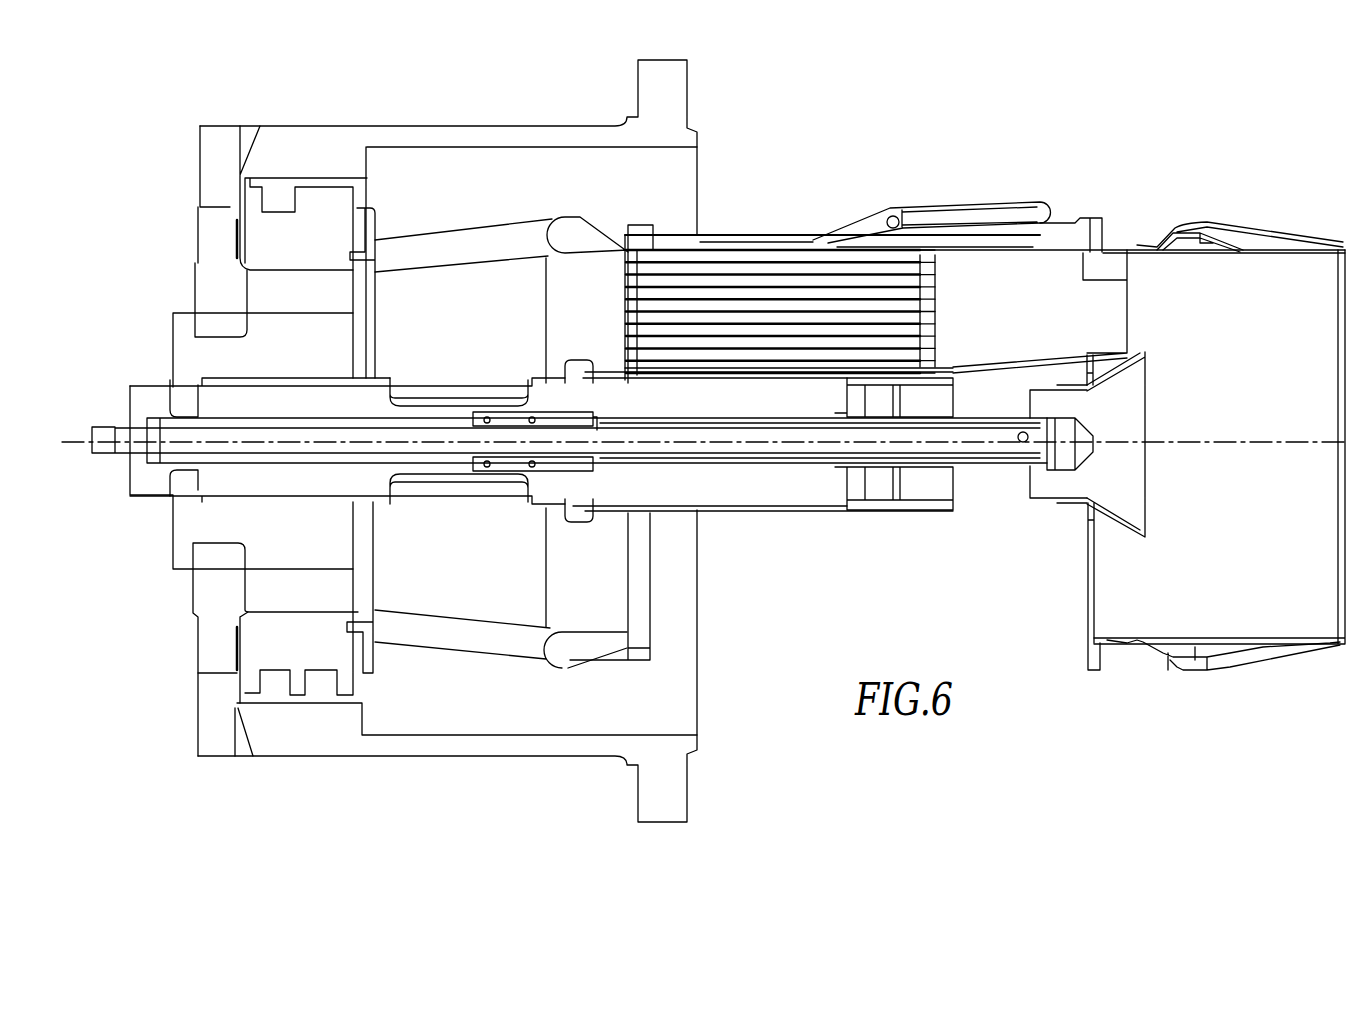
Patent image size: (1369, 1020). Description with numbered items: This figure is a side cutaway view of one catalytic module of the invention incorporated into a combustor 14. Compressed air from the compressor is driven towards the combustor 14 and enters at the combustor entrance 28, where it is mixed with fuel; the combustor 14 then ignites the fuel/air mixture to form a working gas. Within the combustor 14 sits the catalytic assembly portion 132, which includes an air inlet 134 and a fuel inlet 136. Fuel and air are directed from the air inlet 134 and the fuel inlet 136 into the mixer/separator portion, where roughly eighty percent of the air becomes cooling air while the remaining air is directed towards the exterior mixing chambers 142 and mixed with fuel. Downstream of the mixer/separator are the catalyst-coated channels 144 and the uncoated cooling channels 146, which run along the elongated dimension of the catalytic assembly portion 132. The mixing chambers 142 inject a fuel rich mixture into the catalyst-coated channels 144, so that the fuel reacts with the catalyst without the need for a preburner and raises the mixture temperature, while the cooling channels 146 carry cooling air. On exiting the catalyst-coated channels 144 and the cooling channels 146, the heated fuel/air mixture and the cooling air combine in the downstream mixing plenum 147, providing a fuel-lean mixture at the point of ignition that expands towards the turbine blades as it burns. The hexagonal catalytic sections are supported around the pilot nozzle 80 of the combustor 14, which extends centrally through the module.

The combustor 14 is at (818, 552).
The combustor entrance 28 is at (632, 197).
The pilot nozzle 80 is at (763, 447).
The catalytic assembly portion 132 is at (958, 373).
The air inlet 134 is at (545, 298).
The fuel inlet 136 is at (965, 215).
The exterior mixing chambers 142 is at (828, 243).
The catalyst-coated channels 144 is at (625, 286).
The cooling channels 146 is at (625, 346).
The downstream mixing plenum 147 is at (996, 316).